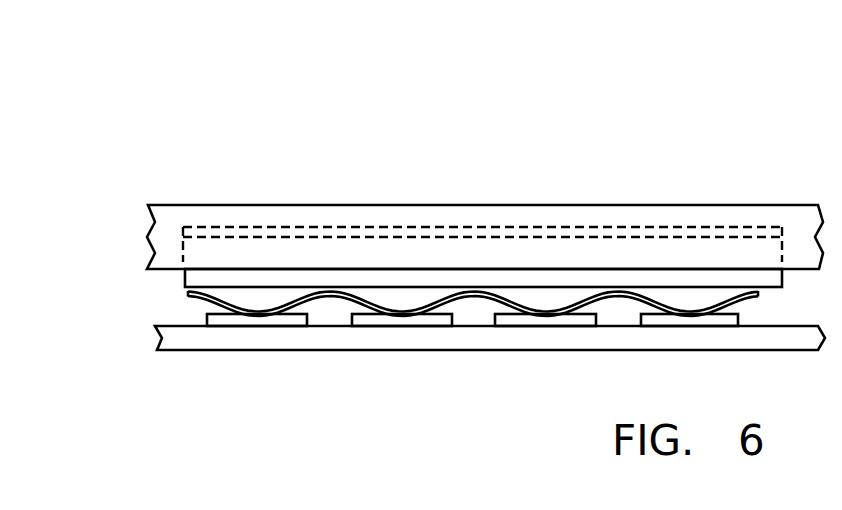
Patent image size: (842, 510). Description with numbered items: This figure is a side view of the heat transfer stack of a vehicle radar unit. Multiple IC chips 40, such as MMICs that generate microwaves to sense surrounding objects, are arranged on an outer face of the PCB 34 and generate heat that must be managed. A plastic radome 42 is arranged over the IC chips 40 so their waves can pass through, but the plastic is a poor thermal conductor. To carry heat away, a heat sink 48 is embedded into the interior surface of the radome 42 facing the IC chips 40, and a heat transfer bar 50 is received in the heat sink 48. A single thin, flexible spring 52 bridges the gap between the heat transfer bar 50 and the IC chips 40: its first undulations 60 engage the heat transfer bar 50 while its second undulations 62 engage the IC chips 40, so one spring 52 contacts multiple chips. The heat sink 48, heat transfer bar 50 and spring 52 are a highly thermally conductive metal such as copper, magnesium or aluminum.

The PCB 34 is at (216, 342).
The IC chips 40 is at (285, 320).
The radome 42 is at (786, 215).
The heat sink 48 is at (371, 238).
The heat transfer bar 50 is at (186, 272).
The spring 52 is at (507, 300).
The first undulations 60 is at (473, 280).
The second undulations 62 is at (403, 312).